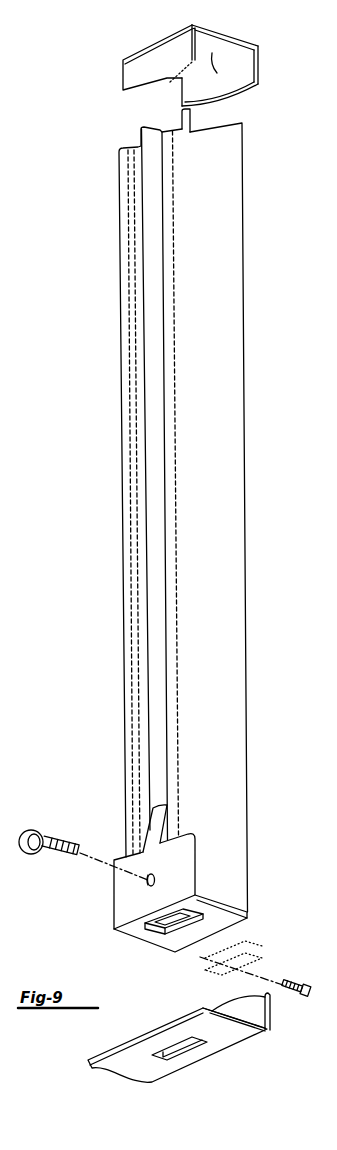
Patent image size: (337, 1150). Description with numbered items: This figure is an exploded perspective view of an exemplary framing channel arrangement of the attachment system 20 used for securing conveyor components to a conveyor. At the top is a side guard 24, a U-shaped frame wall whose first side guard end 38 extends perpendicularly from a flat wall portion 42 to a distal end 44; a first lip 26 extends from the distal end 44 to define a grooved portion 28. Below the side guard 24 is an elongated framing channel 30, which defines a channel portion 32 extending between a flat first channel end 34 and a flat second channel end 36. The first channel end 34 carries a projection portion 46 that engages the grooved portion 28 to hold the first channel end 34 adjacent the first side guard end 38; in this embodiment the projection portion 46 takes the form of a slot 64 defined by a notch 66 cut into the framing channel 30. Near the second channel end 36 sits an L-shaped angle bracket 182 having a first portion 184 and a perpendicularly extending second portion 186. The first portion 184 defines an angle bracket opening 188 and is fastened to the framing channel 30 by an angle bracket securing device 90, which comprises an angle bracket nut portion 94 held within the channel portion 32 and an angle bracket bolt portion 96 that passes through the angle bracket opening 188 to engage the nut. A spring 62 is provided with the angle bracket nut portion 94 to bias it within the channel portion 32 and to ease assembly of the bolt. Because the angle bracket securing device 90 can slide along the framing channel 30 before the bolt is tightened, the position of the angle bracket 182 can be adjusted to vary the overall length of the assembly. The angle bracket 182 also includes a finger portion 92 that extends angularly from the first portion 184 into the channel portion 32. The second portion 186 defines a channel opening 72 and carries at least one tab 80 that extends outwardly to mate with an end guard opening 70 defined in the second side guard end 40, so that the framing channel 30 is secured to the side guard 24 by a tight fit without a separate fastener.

The attachment system 20 is at (86, 311).
The side guard 24 is at (253, 48).
The first lip 26 is at (169, 61).
The grooved portion 28 is at (220, 73).
The framing channel 30 is at (175, 504).
The channel portion 32 is at (152, 247).
The first channel end 34 is at (237, 515).
The second channel end 36 is at (196, 935).
The first side guard end 38 is at (210, 37).
The second side guard end 40 is at (177, 1051).
The flat wall portion 42 is at (244, 70).
The distal end 44 is at (191, 24).
The projection portion 46 is at (212, 122).
The spring 62 is at (302, 980).
The slot 64 is at (192, 118).
The notch 66 is at (209, 114).
The end guard opening 70 is at (185, 1043).
The channel opening 72 is at (188, 942).
The tab 80 is at (156, 935).
The angle bracket securing device 90 is at (78, 836).
The finger portion 92 is at (158, 822).
The angle bracket nut portion 94 is at (250, 953).
The angle bracket bolt portion 96 is at (28, 845).
The angle bracket 182 is at (203, 852).
The first portion 184 is at (167, 884).
The second portion 186 is at (127, 930).
The angle bracket opening 188 is at (147, 880).